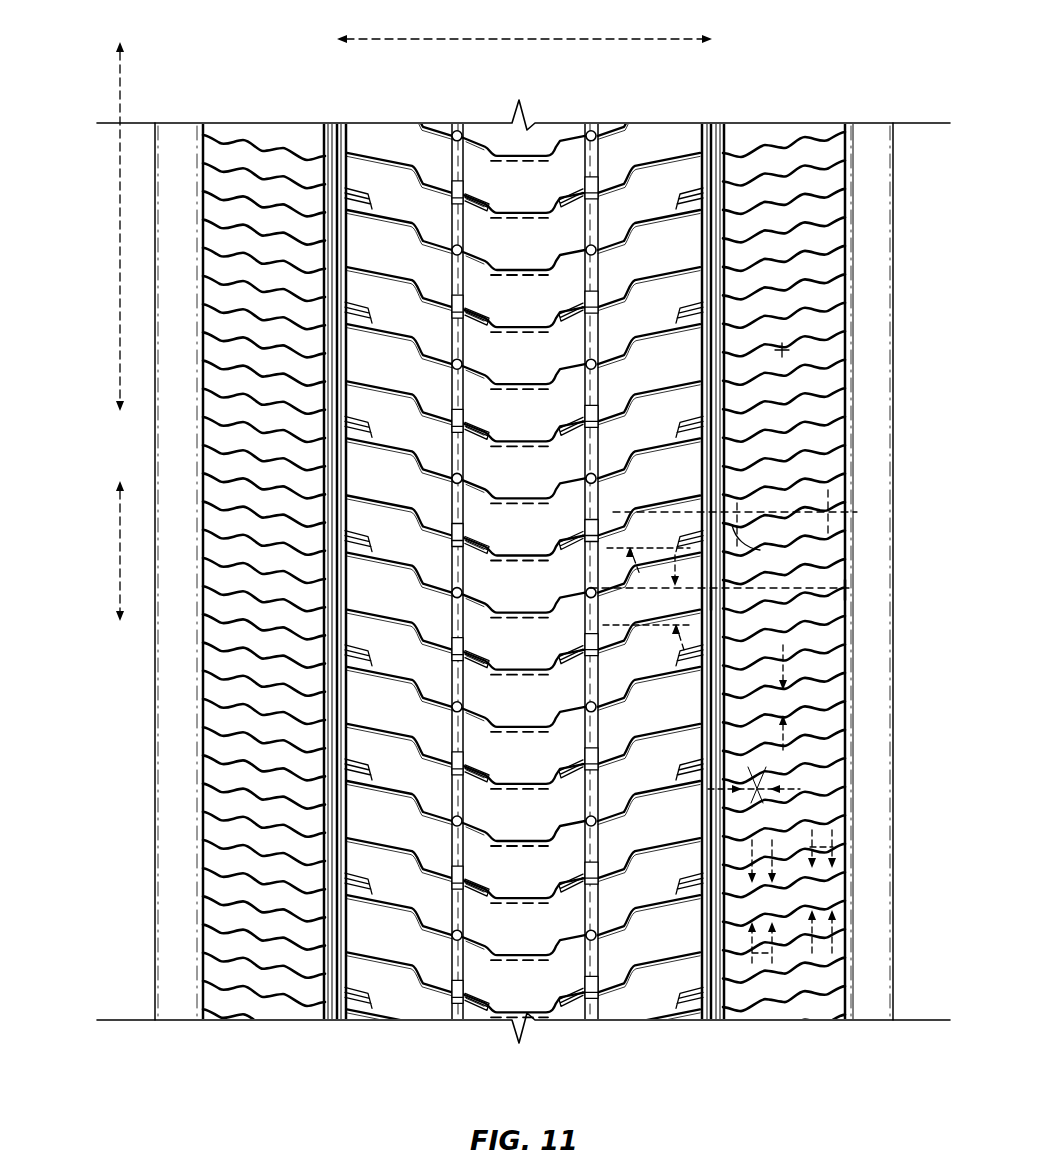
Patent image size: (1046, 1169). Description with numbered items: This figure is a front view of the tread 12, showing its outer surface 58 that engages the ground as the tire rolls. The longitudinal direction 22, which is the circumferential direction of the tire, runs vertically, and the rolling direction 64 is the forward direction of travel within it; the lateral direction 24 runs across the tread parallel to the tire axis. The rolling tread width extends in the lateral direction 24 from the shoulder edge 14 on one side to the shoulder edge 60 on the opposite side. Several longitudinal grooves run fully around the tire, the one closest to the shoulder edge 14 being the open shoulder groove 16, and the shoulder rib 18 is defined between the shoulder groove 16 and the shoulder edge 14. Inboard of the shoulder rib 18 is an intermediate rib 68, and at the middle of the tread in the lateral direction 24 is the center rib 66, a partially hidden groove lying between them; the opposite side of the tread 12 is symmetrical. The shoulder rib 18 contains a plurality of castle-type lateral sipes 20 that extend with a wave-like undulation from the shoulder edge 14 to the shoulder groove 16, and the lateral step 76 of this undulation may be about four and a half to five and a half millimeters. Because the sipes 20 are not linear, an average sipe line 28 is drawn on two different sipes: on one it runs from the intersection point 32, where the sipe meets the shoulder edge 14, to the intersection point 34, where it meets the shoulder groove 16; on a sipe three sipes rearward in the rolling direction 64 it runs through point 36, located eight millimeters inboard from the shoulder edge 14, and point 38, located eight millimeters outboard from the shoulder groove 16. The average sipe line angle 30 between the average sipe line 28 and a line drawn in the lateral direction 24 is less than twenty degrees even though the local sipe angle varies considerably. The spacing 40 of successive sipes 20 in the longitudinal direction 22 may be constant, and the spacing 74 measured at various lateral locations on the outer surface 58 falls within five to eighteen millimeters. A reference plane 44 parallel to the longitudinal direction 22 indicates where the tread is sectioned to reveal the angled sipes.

The tread 12 is at (808, 145).
The shoulder edge 14 is at (851, 324).
The shoulder groove 16 is at (716, 180).
The shoulder rib 18 is at (849, 386).
The sipe 20 is at (822, 228).
The longitudinal direction 22 is at (117, 224).
The lateral direction 24 is at (525, 39).
The average sipe line 28 is at (803, 515).
The average sipe line angle 30 is at (625, 504).
The intersection point 32 is at (845, 587).
The intersection point 34 is at (720, 600).
The point 36 is at (831, 513).
The point 38 is at (808, 516).
The spacing 40 is at (783, 760).
The reference plane 44 is at (782, 350).
The outer surface 58 is at (222, 692).
The shoulder edge 60 is at (202, 747).
The rolling direction 64 is at (117, 548).
The center rib 66 is at (533, 163).
The intermediate rib 68 is at (654, 134).
The spacing 74 is at (833, 862).
The lateral step 76 is at (727, 790).